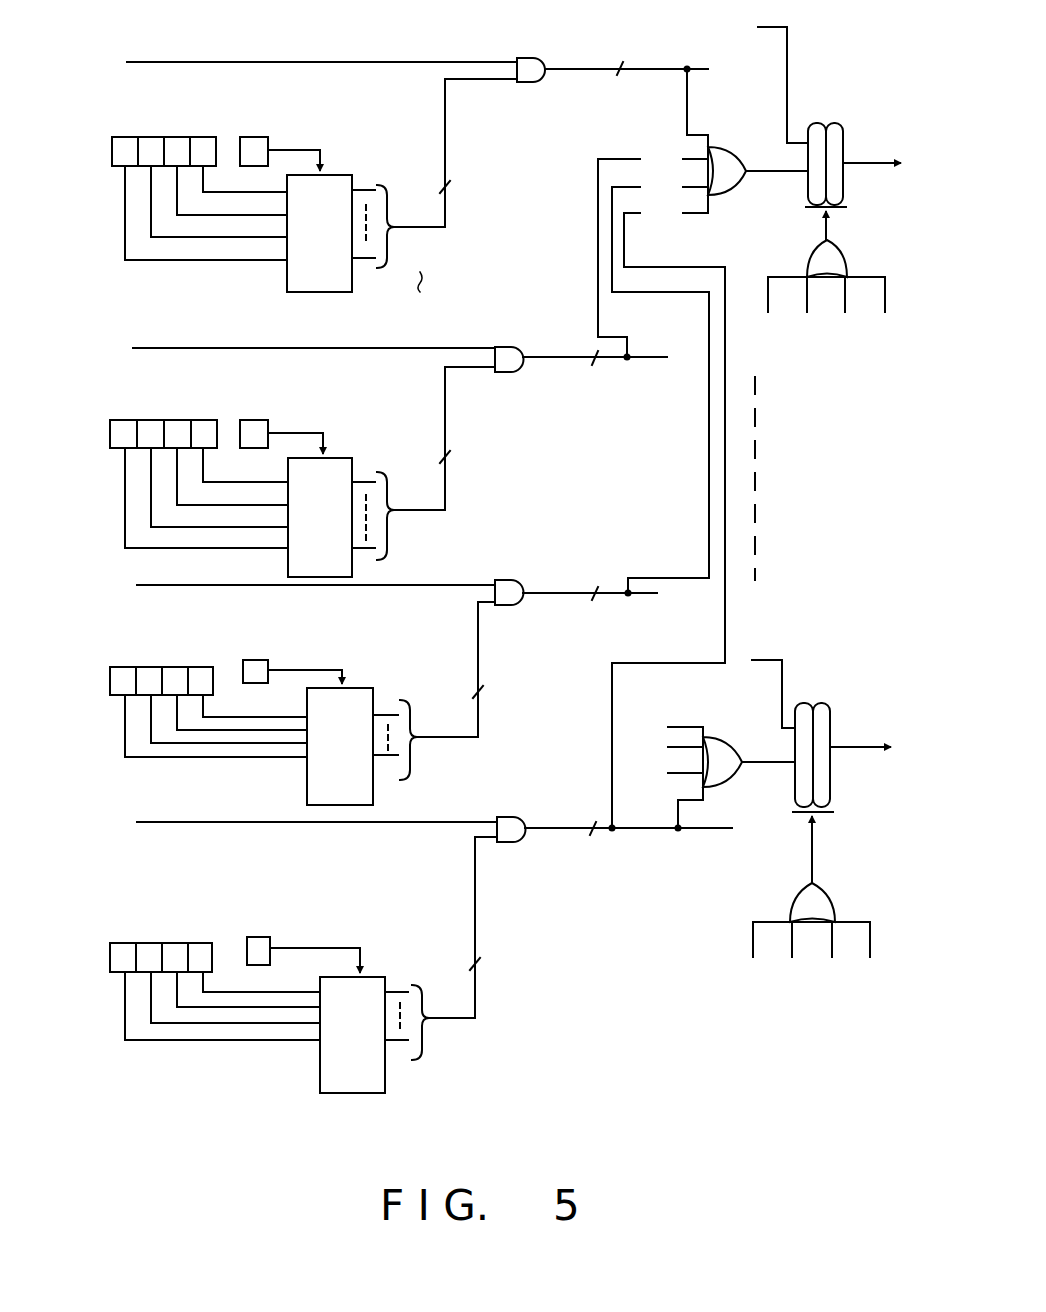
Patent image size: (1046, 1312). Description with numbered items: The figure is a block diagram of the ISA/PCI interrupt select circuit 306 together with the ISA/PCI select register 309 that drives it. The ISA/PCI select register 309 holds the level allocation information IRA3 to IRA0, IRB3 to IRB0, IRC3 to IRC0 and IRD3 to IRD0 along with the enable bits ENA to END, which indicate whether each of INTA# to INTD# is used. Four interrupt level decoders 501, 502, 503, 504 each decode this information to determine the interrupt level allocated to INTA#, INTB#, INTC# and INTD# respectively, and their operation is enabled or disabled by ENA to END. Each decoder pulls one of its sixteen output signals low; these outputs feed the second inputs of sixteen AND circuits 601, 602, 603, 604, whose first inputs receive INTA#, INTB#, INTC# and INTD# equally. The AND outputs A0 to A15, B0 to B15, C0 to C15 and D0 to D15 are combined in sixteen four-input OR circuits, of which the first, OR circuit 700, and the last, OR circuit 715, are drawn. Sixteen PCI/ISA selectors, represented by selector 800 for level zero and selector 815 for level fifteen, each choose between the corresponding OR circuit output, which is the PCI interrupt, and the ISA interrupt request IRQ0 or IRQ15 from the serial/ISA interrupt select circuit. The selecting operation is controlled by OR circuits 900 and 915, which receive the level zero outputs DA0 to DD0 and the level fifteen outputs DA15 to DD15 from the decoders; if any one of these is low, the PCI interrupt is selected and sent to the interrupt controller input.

The ISA/PCI interrupt select circuit 306 is at (688, 1022).
The ISA/PCI select register 309 is at (112, 151).
The interrupt level decoder 501 is at (331, 292).
The interrupt level decoder 502 is at (347, 458).
The interrupt level decoder 503 is at (362, 688).
The interrupt level decoder 504 is at (381, 977).
The AND circuits 601 is at (535, 84).
The AND circuits 602 is at (510, 375).
The AND circuits 603 is at (510, 608).
The AND circuits 604 is at (510, 845).
The 4-input OR circuit 700 is at (738, 155).
The 4-input OR circuit 715 is at (737, 750).
The PCI/ISA selector 800 is at (846, 188).
The PCI/ISA selector 815 is at (823, 702).
The OR circuit 900 is at (849, 262).
The OR circuit 915 is at (835, 897).